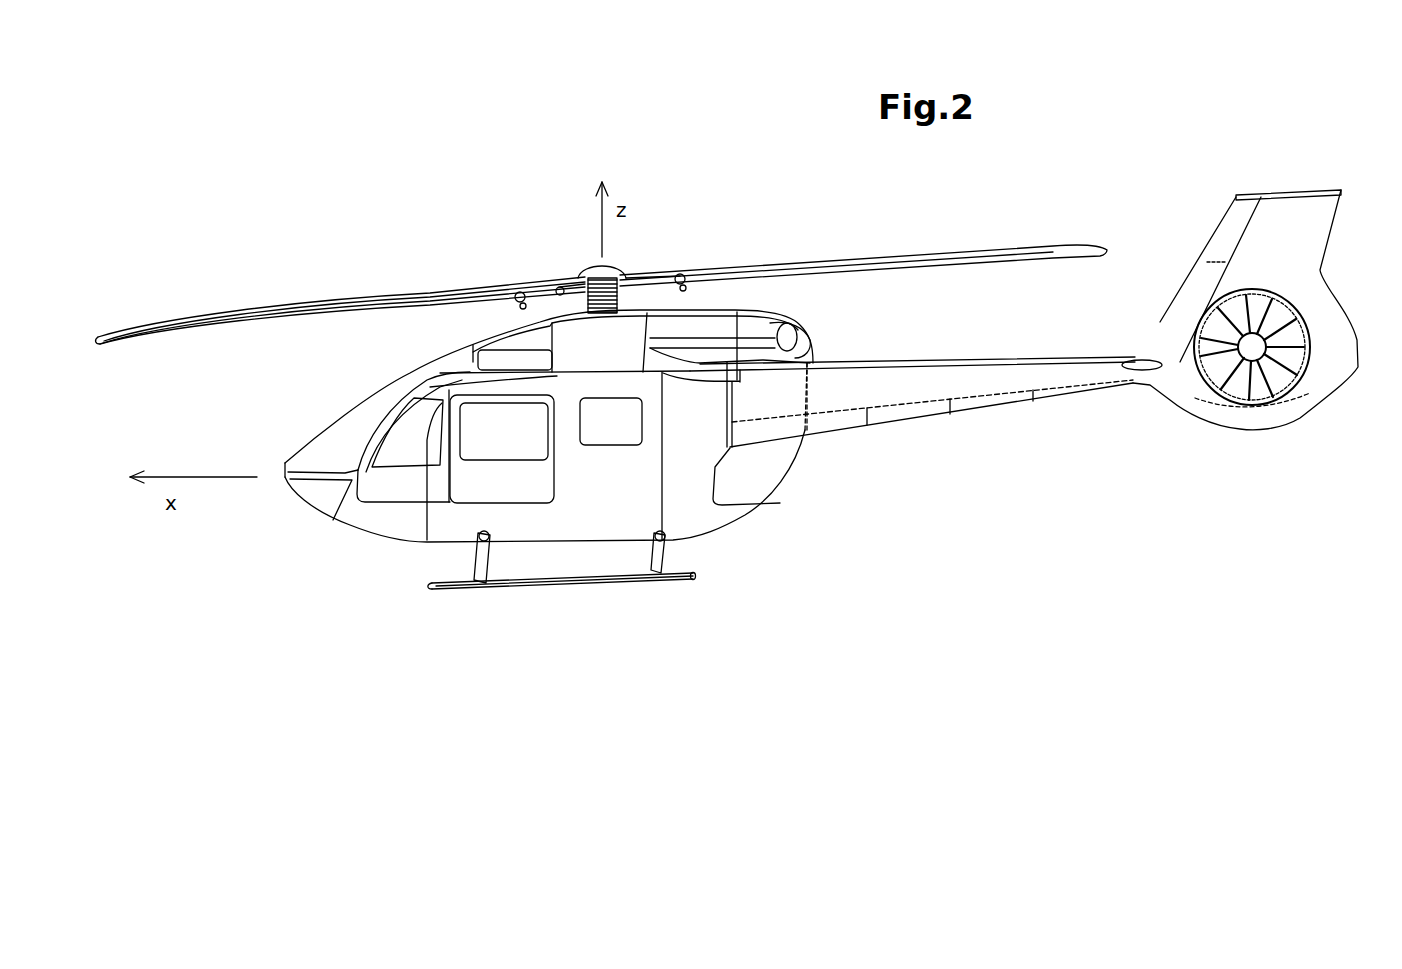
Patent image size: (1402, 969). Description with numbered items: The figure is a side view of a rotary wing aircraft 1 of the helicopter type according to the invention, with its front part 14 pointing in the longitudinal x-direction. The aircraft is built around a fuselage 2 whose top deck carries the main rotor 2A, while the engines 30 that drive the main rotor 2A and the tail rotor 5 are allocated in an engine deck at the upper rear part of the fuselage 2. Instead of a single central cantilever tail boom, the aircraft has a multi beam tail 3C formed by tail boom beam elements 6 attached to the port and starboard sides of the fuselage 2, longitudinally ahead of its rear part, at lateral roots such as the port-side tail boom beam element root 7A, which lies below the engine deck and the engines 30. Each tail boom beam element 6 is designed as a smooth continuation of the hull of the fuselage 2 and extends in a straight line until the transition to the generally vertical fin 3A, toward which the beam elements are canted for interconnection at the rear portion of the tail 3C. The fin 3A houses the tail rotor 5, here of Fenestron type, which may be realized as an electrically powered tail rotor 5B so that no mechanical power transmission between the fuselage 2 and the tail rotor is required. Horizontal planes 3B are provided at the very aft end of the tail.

The rotary wing aircraft 1 is at (363, 218).
The fuselage 2 is at (737, 533).
The main rotor 2A is at (310, 303).
The fin 3A is at (1282, 218).
The horizontal planes 3B is at (1135, 363).
The multi beam tail 3C is at (1013, 418).
The tail rotor 5 is at (1237, 383).
The electrically powered tail rotor 5B is at (1252, 347).
The tail boom beam element 6 is at (908, 428).
The lateral tail boom beam element root 7A is at (732, 455).
The front part 14 is at (275, 475).
The engines 30 is at (718, 333).